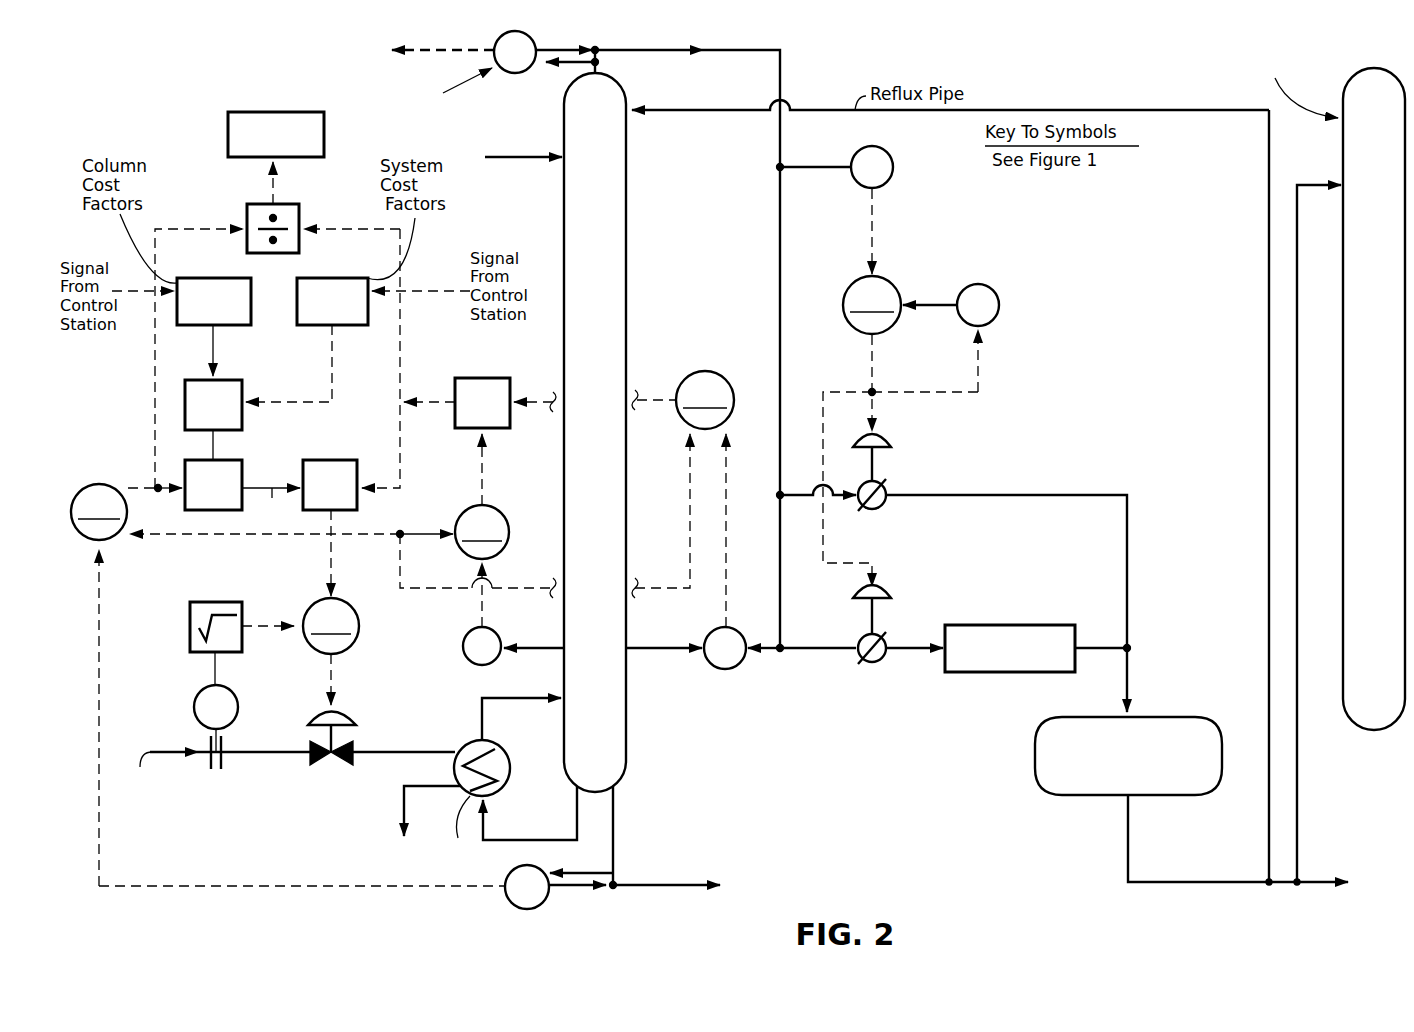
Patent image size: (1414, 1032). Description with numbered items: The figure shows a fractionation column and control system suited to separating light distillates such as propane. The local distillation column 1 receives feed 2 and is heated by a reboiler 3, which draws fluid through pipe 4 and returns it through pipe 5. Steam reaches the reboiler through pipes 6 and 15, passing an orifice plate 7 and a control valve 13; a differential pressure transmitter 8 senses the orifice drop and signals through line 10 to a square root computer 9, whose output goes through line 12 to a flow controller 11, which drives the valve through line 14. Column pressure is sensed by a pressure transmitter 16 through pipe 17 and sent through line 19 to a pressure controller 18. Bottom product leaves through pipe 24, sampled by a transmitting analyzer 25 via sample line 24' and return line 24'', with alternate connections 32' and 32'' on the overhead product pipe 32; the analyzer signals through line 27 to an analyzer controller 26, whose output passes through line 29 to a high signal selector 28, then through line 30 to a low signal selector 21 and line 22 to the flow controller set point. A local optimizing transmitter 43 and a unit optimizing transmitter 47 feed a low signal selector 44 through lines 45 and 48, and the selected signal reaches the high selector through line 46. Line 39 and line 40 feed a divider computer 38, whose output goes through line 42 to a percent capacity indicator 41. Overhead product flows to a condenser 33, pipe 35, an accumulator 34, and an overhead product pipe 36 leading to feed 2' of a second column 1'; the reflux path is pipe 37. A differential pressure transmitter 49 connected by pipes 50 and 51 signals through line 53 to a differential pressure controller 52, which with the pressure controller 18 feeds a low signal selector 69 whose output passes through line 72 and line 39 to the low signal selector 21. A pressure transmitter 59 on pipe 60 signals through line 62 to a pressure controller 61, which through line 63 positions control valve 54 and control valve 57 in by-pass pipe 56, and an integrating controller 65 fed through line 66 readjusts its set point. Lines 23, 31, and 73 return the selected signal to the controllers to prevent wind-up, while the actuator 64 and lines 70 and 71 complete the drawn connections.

The distillation column 1 is at (570, 432).
The column 1' is at (1275, 383).
The feed 2 is at (508, 140).
The feed 2' is at (1317, 535).
The reboiler 3 is at (509, 760).
The pipe 4 is at (530, 839).
The pipe 5 is at (480, 712).
The pipe 6 is at (164, 752).
The orifice plate 7 is at (218, 762).
The differential pressure transmitter 8 is at (193, 703).
The square root computer 9 is at (215, 601).
The line 10 is at (214, 668).
The flow controller 11 is at (316, 603).
The line 12 is at (268, 636).
The control valve 13 is at (350, 717).
The line 14 is at (339, 684).
The pipe 15 is at (388, 752).
The pressure transmitter 16 is at (463, 640).
The pipe 17 is at (447, 50).
The pressure controller 18 is at (505, 517).
The line 19 is at (490, 576).
The low signal selector 21 is at (334, 460).
The line 22 is at (334, 561).
The line 23 is at (410, 533).
The pipe 24 is at (743, 841).
The sample line 24' is at (581, 861).
The return line 24'' is at (583, 903).
The transmitting analyzer 25 is at (525, 910).
The analyzer controller 26 is at (97, 484).
The line 27 is at (375, 887).
The high signal selector 28 is at (243, 476).
The line 29 is at (163, 485).
The line 30 is at (271, 506).
The line 31 is at (128, 541).
The overhead product pipe 32 is at (809, 336).
The sample line 32' is at (564, 79).
The return line 32'' is at (581, 33).
The condenser 33 is at (1003, 675).
The accumulator 34 is at (1103, 797).
The pipe 35 is at (1122, 673).
The overhead product pipe 36 is at (1128, 860).
The pipe 37 is at (1269, 228).
The divider computer 38 is at (302, 211).
The line 39 is at (400, 311).
The line 40 is at (155, 356).
The percent capacity indicator 41 is at (324, 141).
The line 42 is at (270, 191).
The local optimizing transmitter 43 is at (191, 278).
The low signal selector 44 is at (243, 381).
The line 45 is at (215, 345).
The line 46 is at (215, 441).
The unit optimizing transmitter 47 is at (336, 278).
The line 48 is at (334, 345).
The differential pressure transmitter 49 is at (711, 669).
The pipe 50 is at (651, 661).
The pipe 51 is at (764, 660).
The differential pressure controller 52 is at (708, 372).
The line 53 is at (727, 573).
The control valve 54 is at (877, 616).
The by-pass pipe 56 is at (1042, 495).
The control valve 57 is at (876, 467).
The pressure transmitter 59 is at (893, 153).
The pipe 60 is at (809, 167).
The pressure controller 61 is at (853, 287).
The line 62 is at (873, 212).
The line 63 is at (838, 390).
The valve actuator 64 is at (876, 423).
The integrating controller 65 is at (1000, 303).
The line 66 is at (983, 361).
The low signal selector 69 is at (482, 378).
The signal line 70 is at (543, 400).
The signal line 71 is at (482, 466).
The line 72 is at (444, 404).
The line 73 is at (690, 512).